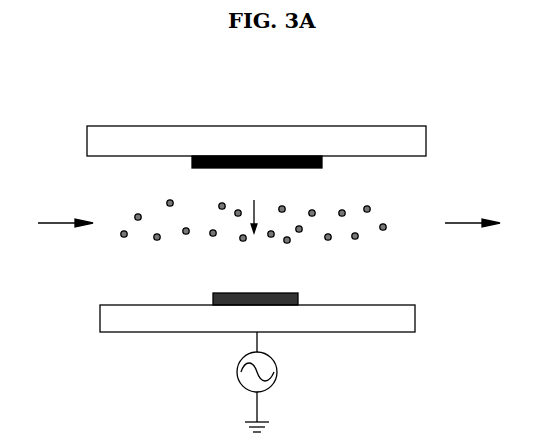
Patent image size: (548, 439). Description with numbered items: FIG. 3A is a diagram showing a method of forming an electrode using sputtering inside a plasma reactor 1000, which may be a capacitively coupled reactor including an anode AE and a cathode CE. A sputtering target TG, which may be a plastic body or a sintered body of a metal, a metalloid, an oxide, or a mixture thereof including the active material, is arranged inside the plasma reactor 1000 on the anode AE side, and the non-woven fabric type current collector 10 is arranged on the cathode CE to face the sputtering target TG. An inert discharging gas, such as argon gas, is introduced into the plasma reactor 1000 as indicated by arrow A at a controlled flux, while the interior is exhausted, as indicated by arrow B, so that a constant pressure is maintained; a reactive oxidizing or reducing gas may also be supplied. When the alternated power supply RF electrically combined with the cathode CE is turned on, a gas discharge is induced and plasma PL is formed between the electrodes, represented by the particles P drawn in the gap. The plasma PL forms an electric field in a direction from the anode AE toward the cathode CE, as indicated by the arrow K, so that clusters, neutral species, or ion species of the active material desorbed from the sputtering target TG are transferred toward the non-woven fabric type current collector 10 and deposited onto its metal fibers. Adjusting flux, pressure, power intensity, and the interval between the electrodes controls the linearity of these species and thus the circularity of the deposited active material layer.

The plasma reactor 1000 is at (411, 109).
The anode AE is at (426, 139).
The sputtering target TG is at (322, 164).
The arrow K is at (257, 206).
The plasma PL is at (240, 251).
The plasma particle P is at (386, 224).
The arrow A is at (60, 224).
The gas outflow direction B is at (466, 224).
The non-woven fabric type current collector 10 is at (298, 296).
The cathode CE is at (415, 320).
The alternated power supply RF is at (237, 372).